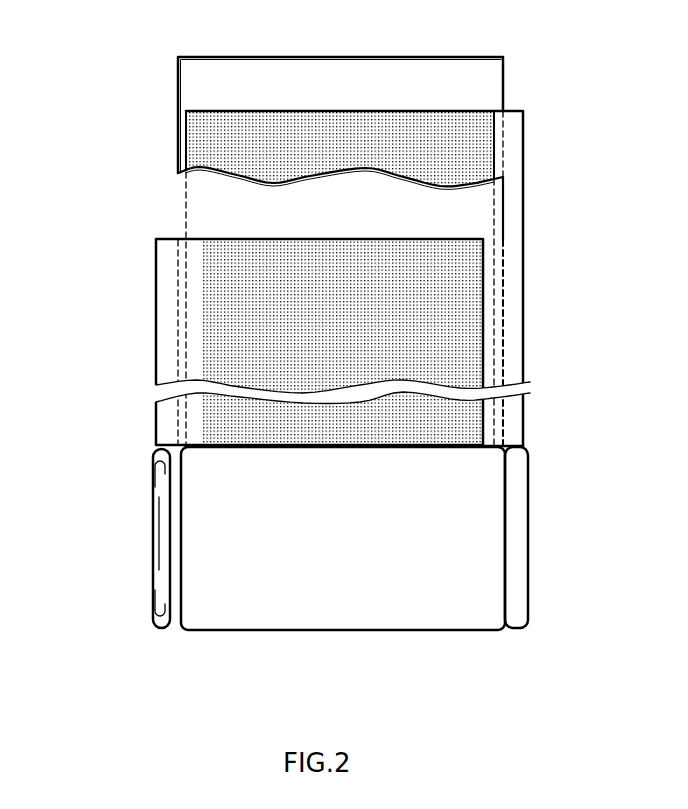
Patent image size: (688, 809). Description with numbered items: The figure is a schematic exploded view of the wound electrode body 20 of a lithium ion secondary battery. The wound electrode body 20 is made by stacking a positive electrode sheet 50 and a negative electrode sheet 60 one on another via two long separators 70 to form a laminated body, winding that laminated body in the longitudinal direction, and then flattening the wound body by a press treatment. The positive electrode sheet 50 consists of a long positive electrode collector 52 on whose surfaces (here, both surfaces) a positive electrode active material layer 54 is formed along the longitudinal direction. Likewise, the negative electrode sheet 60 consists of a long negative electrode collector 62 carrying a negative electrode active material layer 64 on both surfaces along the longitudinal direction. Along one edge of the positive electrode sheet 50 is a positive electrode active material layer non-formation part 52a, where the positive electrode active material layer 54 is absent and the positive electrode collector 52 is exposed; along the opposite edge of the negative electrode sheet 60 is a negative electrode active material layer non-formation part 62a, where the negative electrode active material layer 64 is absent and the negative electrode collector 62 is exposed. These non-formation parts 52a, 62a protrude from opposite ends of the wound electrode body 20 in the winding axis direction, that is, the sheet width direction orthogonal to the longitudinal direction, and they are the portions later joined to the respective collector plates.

The wound electrode body 20 is at (423, 612).
The positive electrode sheet 50 is at (257, 433).
The positive electrode collector 52 is at (157, 372).
The positive electrode active material layer non-formation part 52a is at (163, 341).
The positive electrode active material layer 54 is at (215, 257).
The negative electrode sheet 60 is at (411, 369).
The negative electrode collector 62 is at (525, 285).
The negative electrode active material layer non-formation part 62a is at (513, 233).
The negative electrode active material layer 64 is at (492, 131).
The separator 70 is at (195, 83).